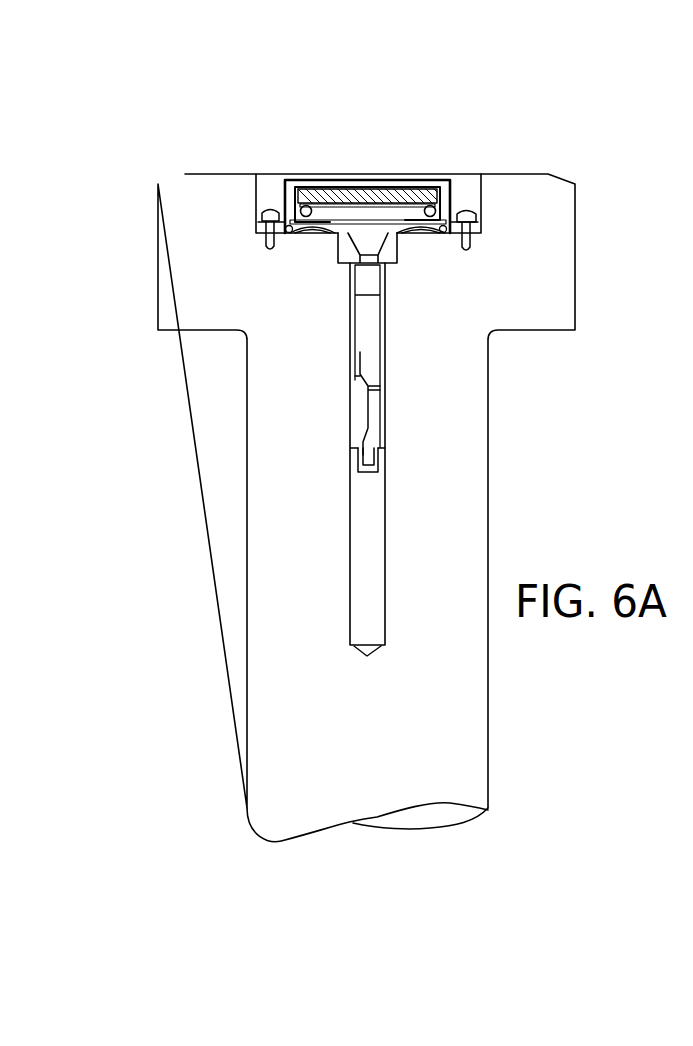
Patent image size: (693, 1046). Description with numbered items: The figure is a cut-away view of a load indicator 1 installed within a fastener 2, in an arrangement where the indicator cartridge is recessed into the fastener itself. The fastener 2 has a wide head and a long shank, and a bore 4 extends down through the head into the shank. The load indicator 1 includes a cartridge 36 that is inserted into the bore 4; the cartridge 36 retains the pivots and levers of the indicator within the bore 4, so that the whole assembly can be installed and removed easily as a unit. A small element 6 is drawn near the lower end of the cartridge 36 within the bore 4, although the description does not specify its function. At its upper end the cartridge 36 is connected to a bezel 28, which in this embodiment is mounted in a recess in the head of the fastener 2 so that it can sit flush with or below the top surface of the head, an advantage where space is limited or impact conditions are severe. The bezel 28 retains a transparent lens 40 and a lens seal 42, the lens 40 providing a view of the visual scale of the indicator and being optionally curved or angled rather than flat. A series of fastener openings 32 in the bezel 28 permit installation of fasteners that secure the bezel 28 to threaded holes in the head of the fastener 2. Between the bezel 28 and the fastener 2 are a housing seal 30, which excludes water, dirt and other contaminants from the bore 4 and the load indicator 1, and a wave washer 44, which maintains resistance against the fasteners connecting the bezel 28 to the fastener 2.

The fastener 2 is at (180, 185).
The load indicator 1 is at (292, 178).
The bezel 28 is at (448, 177).
The transparent lens 40 is at (383, 190).
The lens seal 42 is at (312, 205).
The wave washer 44 is at (326, 230).
The fastener openings 32 is at (257, 214).
The housing seal 30 is at (447, 226).
The cartridge 36 is at (373, 347).
The bore 4 is at (358, 412).
The retaining clip 6 is at (380, 457).